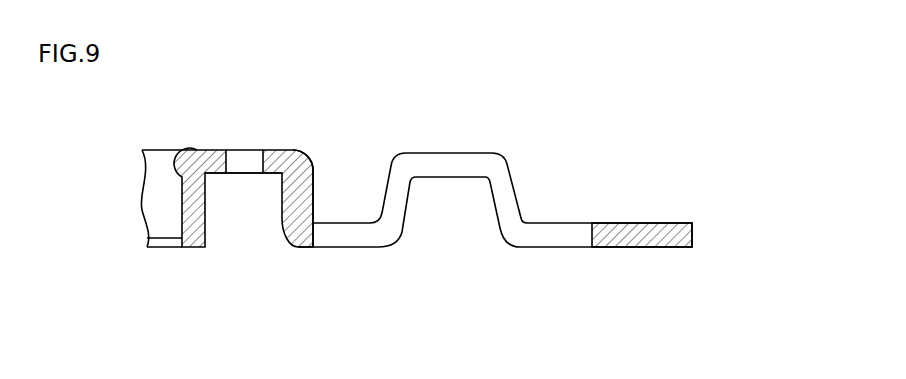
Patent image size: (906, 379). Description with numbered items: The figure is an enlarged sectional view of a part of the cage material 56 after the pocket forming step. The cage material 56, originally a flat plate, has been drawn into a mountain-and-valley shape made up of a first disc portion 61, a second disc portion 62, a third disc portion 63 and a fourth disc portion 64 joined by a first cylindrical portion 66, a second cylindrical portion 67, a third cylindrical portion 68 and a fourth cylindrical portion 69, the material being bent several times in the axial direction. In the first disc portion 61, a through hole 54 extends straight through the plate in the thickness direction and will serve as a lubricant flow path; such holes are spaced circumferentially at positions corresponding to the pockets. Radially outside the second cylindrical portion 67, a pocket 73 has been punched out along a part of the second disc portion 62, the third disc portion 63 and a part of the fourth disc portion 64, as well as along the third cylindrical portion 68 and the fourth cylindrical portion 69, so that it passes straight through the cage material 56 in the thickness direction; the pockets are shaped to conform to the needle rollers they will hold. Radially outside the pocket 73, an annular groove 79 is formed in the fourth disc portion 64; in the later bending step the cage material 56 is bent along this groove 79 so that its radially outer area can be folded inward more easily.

The through hole 54 is at (241, 162).
The cage material 56 is at (622, 128).
The first disc portion 61 is at (270, 158).
The second disc portion 62 is at (342, 235).
The third disc portion 63 is at (450, 162).
The fourth disc portion 64 is at (643, 235).
The first cylindrical portion 66 is at (185, 213).
The second cylindrical portion 67 is at (300, 195).
The third cylindrical portion 68 is at (398, 193).
The fourth cylindrical portion 69 is at (502, 195).
The pocket 73 is at (468, 254).
The annular groove 79 is at (620, 226).